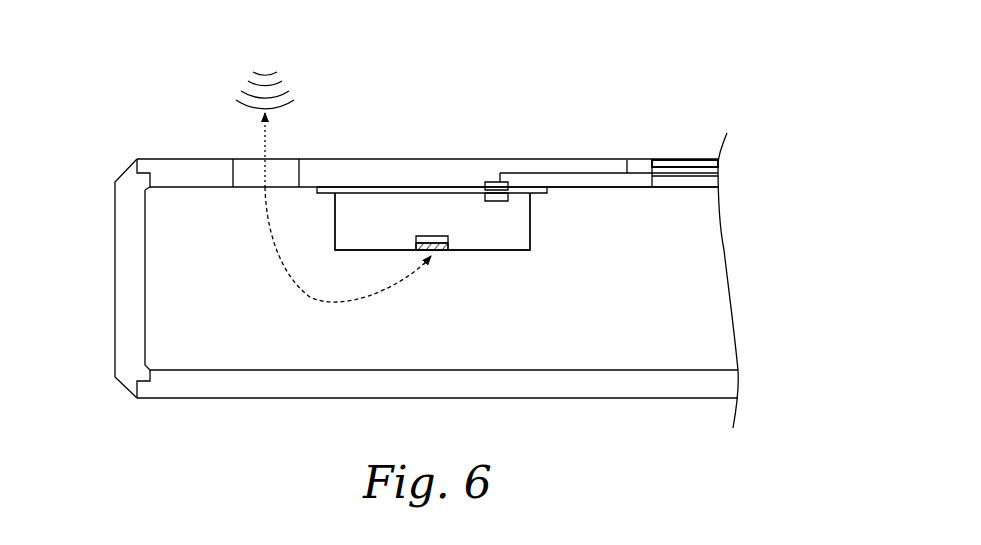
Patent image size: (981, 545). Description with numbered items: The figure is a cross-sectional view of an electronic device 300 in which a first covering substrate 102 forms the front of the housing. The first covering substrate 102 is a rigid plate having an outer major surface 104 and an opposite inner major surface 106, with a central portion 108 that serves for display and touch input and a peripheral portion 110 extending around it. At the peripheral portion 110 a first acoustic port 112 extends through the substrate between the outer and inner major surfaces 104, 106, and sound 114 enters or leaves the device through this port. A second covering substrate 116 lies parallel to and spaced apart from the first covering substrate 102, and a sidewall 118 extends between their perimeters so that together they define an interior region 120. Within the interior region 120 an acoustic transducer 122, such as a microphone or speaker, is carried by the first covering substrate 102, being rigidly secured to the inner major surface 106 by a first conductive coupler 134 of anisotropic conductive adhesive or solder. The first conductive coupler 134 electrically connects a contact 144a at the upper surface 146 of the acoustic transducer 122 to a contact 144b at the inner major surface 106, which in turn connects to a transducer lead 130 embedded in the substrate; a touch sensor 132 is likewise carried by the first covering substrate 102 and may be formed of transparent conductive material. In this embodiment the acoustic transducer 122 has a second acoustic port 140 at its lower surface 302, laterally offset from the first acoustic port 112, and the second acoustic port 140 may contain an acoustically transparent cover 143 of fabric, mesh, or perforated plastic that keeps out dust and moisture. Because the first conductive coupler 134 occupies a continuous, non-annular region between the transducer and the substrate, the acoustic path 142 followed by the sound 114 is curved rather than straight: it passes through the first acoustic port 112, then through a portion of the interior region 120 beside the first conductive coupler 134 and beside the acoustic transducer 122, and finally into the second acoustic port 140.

The first covering substrate 102 is at (687, 92).
The outer major surface 104 is at (558, 157).
The inner major surface 106 is at (558, 193).
The central portion 108 is at (677, 158).
The peripheral portion 110 is at (625, 165).
The first acoustic port 112 is at (236, 173).
The sound 114 is at (266, 70).
The second covering substrate 116 is at (285, 398).
The sidewall 118 is at (134, 290).
The interior region 120 is at (634, 340).
The acoustic transducer 122 is at (393, 226).
The transducer lead 130 is at (673, 178).
The touch sensor 132 is at (695, 160).
The first conductive coupler 134 is at (430, 187).
The second acoustic port 140 is at (415, 241).
The acoustic path 142 is at (350, 303).
The acoustically transparent cover 143 is at (442, 252).
The contact 144a is at (495, 202).
The contact 144b is at (492, 181).
The upper surface 146 is at (383, 189).
The electronic device 300 is at (722, 105).
The lower surface 302 is at (512, 253).